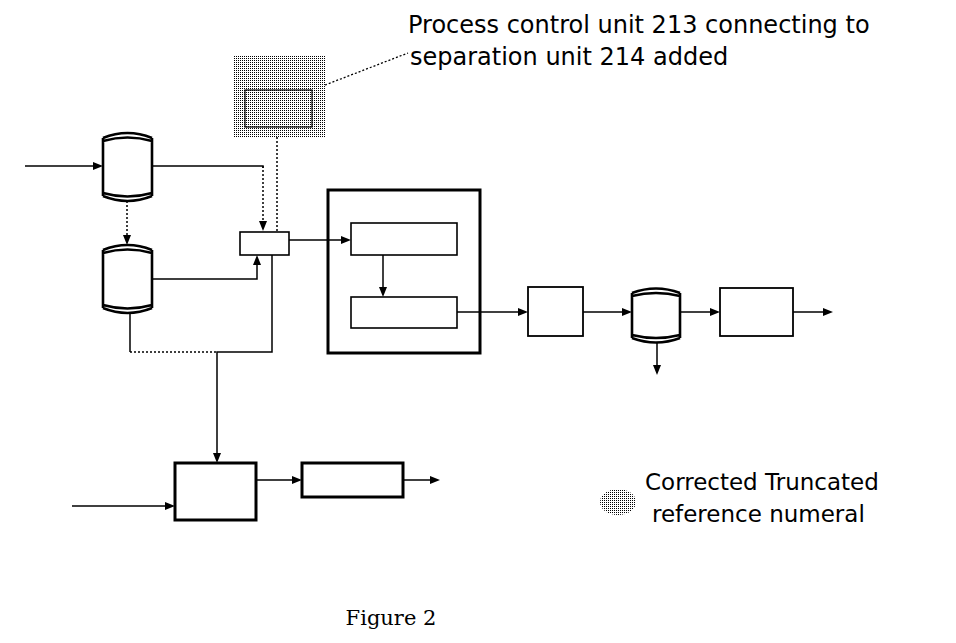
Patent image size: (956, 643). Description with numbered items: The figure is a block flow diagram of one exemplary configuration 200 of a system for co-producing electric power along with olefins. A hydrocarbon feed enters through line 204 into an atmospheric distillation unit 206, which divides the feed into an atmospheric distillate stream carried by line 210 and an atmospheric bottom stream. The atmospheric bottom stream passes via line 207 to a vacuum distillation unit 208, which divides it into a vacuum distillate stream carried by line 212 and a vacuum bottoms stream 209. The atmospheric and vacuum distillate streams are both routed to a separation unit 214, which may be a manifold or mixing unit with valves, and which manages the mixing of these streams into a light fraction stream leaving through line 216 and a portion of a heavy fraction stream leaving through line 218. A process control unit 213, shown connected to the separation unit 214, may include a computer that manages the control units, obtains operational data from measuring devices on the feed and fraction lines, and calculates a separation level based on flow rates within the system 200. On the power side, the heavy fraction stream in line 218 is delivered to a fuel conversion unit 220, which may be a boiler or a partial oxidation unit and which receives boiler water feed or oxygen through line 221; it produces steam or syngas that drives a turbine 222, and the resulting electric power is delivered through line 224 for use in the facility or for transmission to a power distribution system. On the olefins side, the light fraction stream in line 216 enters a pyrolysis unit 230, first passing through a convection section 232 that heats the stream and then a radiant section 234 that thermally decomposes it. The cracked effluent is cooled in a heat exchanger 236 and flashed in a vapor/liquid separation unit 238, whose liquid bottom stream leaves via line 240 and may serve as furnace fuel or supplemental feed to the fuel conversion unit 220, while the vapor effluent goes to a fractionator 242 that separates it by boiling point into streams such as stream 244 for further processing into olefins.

The configuration 200 is at (595, 91).
The hydrocarbon feed line 204 is at (53, 166).
The atmospheric distillation unit 206 is at (108, 137).
The atmospheric bottom stream line 207 is at (123, 222).
The vacuum distillation unit 208 is at (102, 275).
The vacuum bottoms stream 209 is at (130, 343).
The atmospheric distillate stream line 210 is at (233, 166).
The vacuum distillate stream line 212 is at (215, 278).
The process control unit 213 is at (320, 142).
The separation unit 214 is at (240, 240).
The light fraction stream line 216 is at (310, 240).
The heavy fraction stream line 218 is at (215, 413).
The fuel conversion unit 220 is at (172, 468).
The utility feed line 221 is at (138, 506).
The turbine 222 is at (353, 463).
The electric power line 224 is at (418, 477).
The pyrolysis unit 230 is at (342, 188).
The convection section 232 is at (404, 260).
The radiant section 234 is at (439, 311).
The heat exchanger 236 is at (553, 287).
The vapor/liquid separation unit 238 is at (657, 287).
The bottom stream line 240 is at (655, 347).
The fractionator 242 is at (753, 287).
The separated stream 244 is at (810, 310).